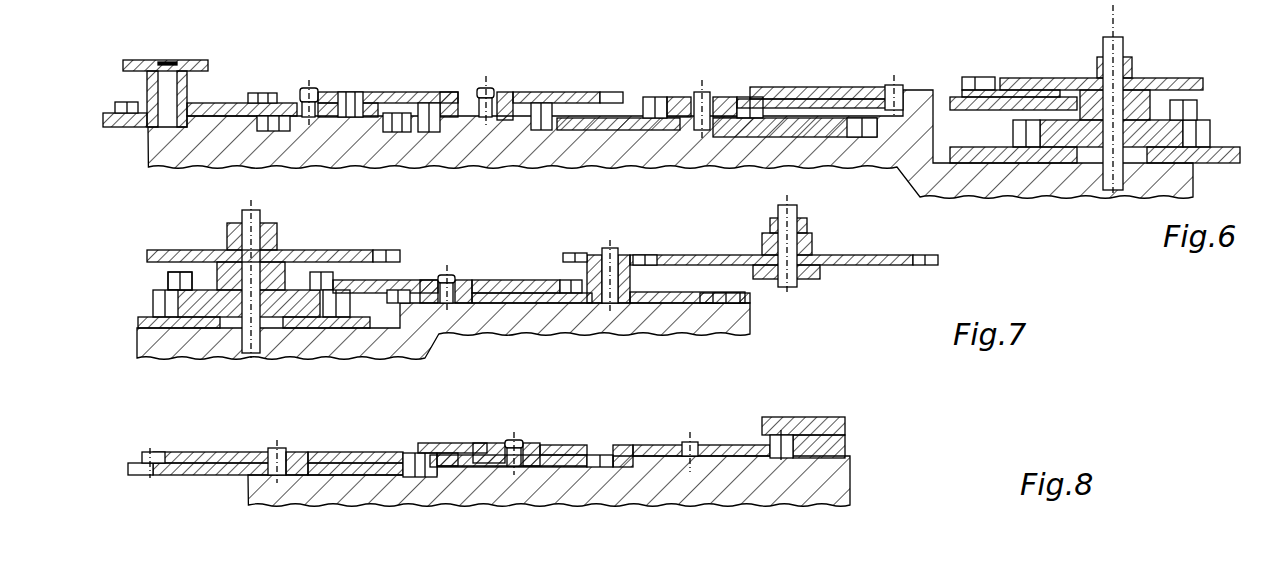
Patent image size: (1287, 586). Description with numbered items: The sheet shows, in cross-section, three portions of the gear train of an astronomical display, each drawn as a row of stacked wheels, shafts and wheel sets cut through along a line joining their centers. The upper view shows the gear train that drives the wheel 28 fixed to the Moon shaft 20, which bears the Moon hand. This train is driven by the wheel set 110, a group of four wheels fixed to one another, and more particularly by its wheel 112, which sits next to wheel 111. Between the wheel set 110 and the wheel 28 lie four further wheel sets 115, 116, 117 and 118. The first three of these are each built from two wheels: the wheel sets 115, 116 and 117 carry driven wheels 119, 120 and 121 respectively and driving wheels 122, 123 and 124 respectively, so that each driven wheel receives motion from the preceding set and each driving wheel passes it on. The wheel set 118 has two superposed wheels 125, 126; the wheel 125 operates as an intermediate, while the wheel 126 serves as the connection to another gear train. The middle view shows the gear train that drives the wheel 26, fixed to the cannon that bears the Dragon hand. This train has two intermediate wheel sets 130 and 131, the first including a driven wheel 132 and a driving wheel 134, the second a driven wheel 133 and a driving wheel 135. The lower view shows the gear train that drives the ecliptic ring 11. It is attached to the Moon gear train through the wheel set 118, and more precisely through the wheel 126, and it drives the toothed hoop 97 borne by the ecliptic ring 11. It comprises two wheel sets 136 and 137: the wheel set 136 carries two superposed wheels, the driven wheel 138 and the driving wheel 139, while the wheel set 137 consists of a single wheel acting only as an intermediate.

In FIG. 6, the Moon shaft 20 is at (325, 58).
In FIG. 6, the wheel set 110 is at (180, 50).
In FIG. 6, the wheel 111 is at (268, 131).
In FIG. 6, the wheel 112 is at (116, 103).
In FIG. 6, the wheel set 115 is at (323, 82).
In FIG. 6, the wheel set 116 is at (494, 80).
In FIG. 6, the wheel set 117 is at (714, 82).
In FIG. 6, the wheel set 118 is at (887, 78).
In FIG. 8, the wheel set 118 is at (268, 441).
In FIG. 6, the driven wheel 119 is at (398, 132).
In FIG. 6, the driven wheel 120 is at (433, 103).
In FIG. 6, the driven wheel 121 is at (613, 130).
In FIG. 6, the driving wheel 122 is at (266, 93).
In FIG. 6, the driving wheel 123 is at (433, 120).
In FIG. 6, the driving wheel 124 is at (650, 97).
In FIG. 6, the wheel 125 is at (827, 99).
In FIG. 6, the wheel 126 is at (770, 87).
In FIG. 8, the wheel 126 is at (193, 452).
In FIG. 6, the wheel 28 is at (1197, 108).
In FIG. 7, the wheel 28 is at (168, 280).
In FIG. 7, the wheel 26 is at (355, 252).
In FIG. 7, the intermediate wheel set 130 is at (459, 272).
In FIG. 7, the intermediate wheel set 131 is at (623, 240).
In FIG. 7, the driven wheel 132 is at (515, 280).
In FIG. 7, the driven wheel 133 is at (663, 303).
In FIG. 7, the driving wheel 134 is at (395, 303).
In FIG. 7, the driving wheel 135 is at (578, 253).
In FIG. 8, the ecliptic ring 11 is at (828, 405).
In FIG. 8, the toothed hoop 97 is at (845, 442).
In FIG. 8, the wheel set 136 is at (526, 438).
In FIG. 8, the wheel set 137 is at (713, 442).
In FIG. 8, the driven wheel 138 is at (573, 467).
In FIG. 8, the driving wheel 139 is at (467, 443).